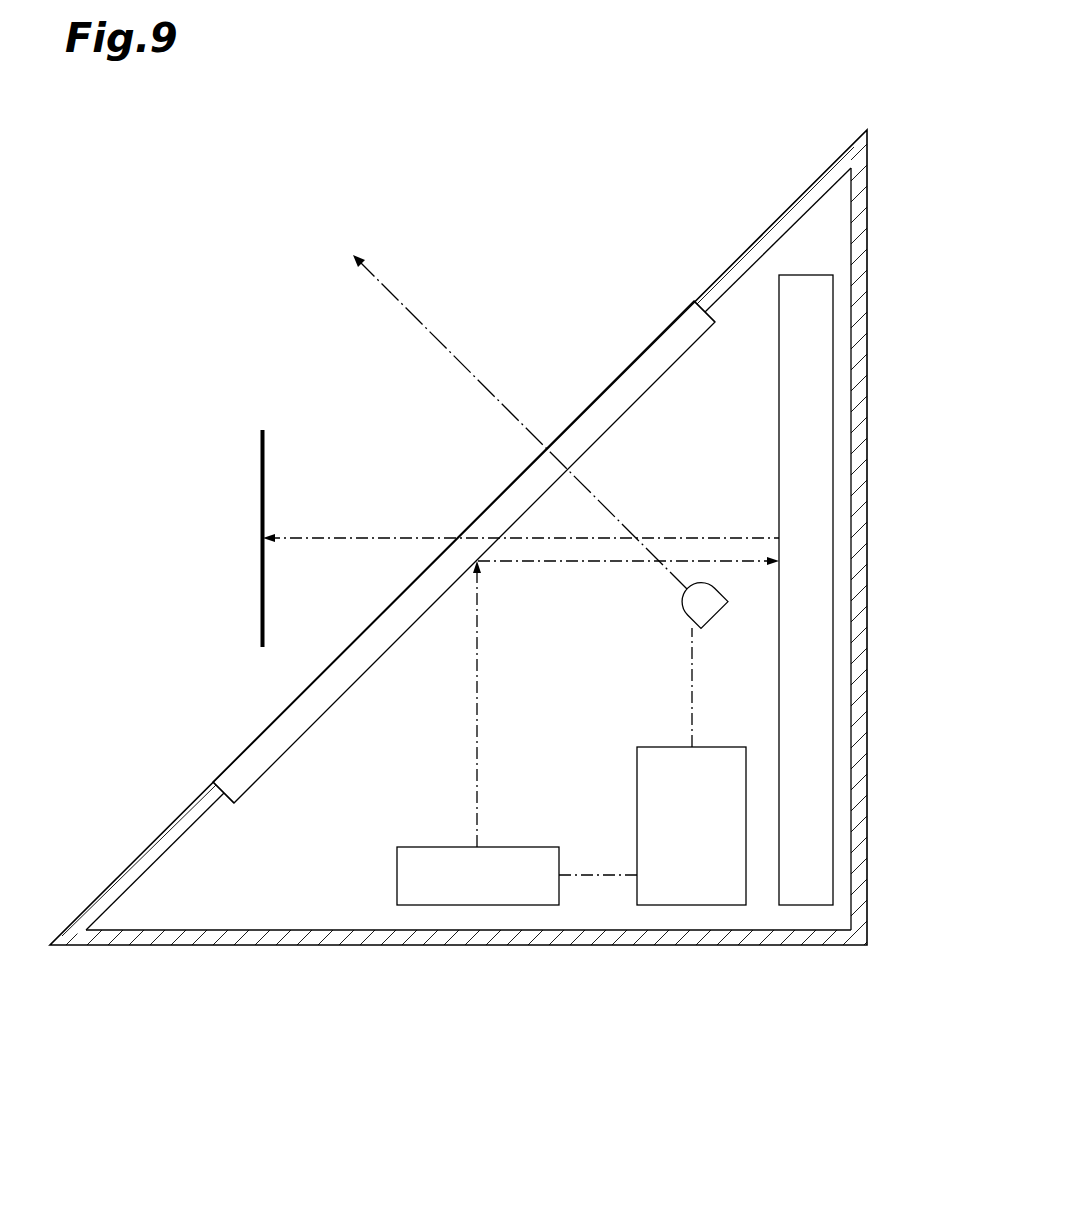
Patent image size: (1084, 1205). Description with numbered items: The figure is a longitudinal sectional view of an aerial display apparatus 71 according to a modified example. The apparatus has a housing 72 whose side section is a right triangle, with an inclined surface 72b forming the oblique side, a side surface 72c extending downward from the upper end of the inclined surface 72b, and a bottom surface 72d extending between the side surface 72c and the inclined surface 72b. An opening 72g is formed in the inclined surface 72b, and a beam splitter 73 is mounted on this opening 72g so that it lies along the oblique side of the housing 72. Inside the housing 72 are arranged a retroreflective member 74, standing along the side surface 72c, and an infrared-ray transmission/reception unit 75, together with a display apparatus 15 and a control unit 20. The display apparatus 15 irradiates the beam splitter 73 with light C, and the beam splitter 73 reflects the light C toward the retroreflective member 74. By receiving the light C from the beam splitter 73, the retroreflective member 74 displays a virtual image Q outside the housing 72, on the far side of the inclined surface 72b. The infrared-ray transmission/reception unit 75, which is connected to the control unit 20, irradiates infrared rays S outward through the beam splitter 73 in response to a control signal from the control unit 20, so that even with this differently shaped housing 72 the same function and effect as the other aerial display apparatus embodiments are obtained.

The aerial display apparatus 71 is at (702, 128).
The housing 72 is at (808, 176).
The inclined surface 72b is at (757, 223).
The side surface 72c is at (873, 358).
The bottom surface 72d is at (218, 948).
The opening 72g is at (700, 299).
The beam splitter 73 is at (623, 372).
The retroreflective member 74 is at (820, 477).
The infrared-ray transmission/reception unit 75 is at (723, 587).
The display apparatus 15 is at (487, 893).
The control unit 20 is at (683, 880).
The virtual image Q is at (258, 460).
The infrared rays S is at (432, 328).
The light C is at (568, 567).